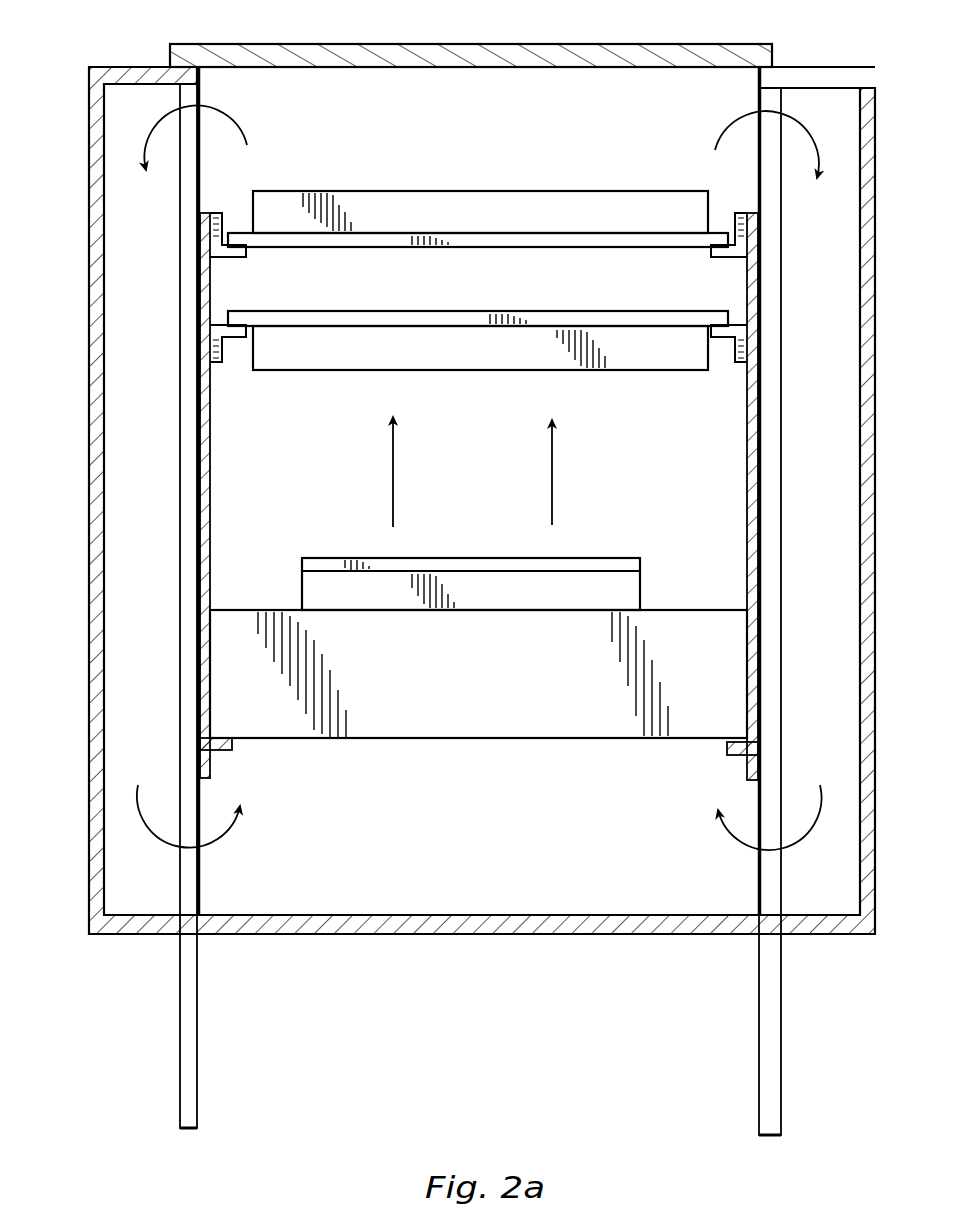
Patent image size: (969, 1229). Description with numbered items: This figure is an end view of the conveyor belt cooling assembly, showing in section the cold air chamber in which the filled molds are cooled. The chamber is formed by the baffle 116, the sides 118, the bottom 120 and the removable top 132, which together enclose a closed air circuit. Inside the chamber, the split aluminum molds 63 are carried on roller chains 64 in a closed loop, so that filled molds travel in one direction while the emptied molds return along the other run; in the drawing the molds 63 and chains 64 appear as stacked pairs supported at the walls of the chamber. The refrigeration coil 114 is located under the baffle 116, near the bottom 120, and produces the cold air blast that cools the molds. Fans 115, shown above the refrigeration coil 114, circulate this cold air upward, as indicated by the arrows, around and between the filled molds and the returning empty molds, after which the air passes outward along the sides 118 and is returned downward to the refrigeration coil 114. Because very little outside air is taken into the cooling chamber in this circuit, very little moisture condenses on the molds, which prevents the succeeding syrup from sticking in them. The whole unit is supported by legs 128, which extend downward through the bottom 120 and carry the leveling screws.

The removable top 132 is at (552, 45).
The sides 118 is at (90, 470).
The bottom 120 is at (457, 935).
The legs 128 is at (198, 1017).
The baffle 116 is at (212, 472).
The split aluminum molds 63 is at (515, 191).
The roller chains 64 is at (510, 248).
The fans 115 is at (458, 558).
The refrigeration coil 114 is at (512, 679).